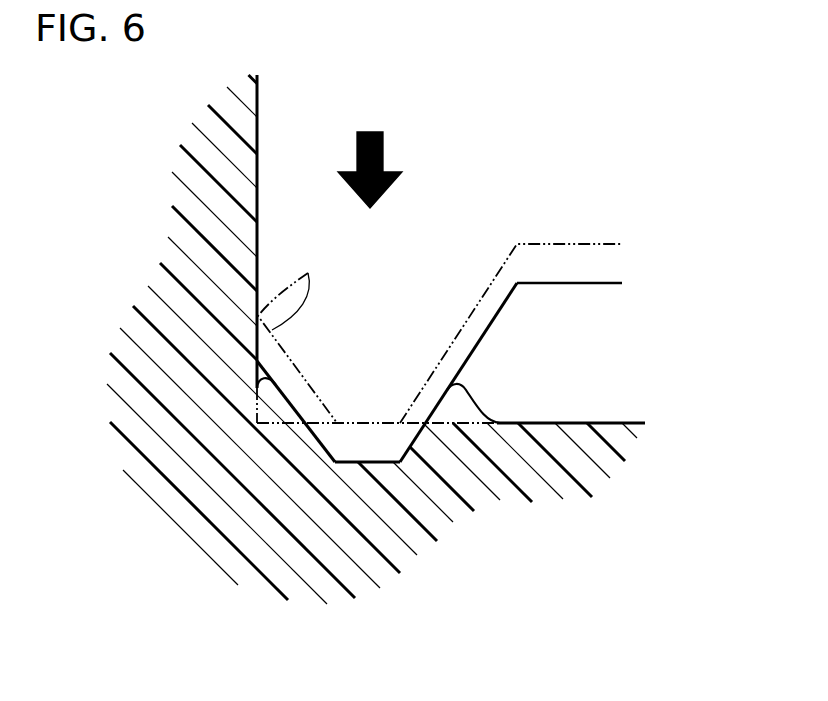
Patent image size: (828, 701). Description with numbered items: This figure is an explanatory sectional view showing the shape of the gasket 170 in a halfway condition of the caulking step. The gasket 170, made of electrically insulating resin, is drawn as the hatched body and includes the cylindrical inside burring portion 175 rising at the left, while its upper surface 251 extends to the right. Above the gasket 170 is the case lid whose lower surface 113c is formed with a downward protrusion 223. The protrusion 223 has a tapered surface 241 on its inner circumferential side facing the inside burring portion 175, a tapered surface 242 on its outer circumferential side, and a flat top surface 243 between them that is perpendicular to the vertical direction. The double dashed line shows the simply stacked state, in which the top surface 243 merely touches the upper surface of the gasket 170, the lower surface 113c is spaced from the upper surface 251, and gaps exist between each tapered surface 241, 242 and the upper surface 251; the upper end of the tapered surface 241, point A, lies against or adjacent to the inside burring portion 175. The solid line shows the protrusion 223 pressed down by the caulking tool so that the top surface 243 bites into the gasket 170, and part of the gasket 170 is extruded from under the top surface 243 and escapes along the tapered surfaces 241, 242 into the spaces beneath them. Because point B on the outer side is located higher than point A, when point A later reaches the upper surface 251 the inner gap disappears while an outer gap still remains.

The gasket 170 is at (220, 545).
The inside burring portion 175 is at (212, 225).
The protrusion 223 is at (387, 441).
The tapered surface 241 is at (290, 366).
The tapered surface 242 is at (455, 344).
The top surface 243 is at (377, 462).
The upper surface 251 is at (543, 422).
The lower surface 113c is at (562, 285).
The point A is at (297, 333).
The point B is at (508, 272).